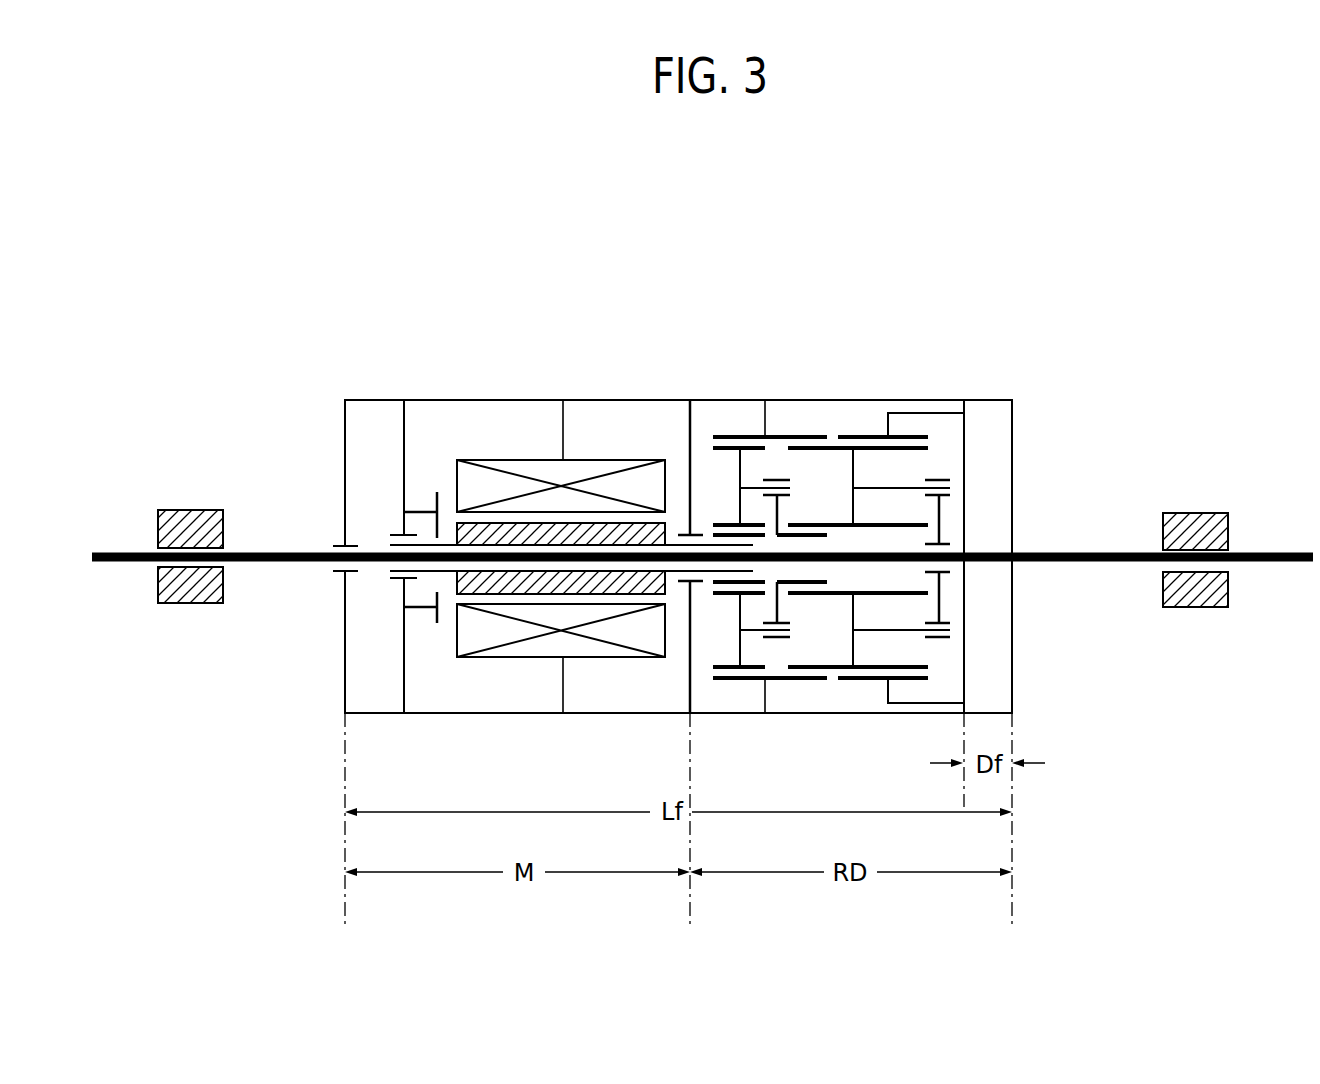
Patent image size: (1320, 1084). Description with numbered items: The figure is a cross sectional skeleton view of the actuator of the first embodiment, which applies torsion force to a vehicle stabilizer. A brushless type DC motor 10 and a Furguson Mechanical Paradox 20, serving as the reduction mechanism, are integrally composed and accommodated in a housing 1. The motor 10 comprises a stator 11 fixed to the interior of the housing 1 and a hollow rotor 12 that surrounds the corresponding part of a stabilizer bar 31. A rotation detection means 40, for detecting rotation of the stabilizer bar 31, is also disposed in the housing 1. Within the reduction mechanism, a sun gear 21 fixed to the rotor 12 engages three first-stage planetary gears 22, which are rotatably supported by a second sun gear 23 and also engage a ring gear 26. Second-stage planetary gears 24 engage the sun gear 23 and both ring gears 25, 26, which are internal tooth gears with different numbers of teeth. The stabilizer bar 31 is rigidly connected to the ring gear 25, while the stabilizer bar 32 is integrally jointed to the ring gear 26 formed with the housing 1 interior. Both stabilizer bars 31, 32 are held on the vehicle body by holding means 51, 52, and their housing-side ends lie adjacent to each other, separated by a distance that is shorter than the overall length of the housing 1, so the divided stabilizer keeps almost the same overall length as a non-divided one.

The housing 1 is at (597, 714).
The brushless type DC motor 10 is at (571, 563).
The stator 11 is at (512, 483).
The rotor 12 is at (457, 528).
The Furguson Mechanical Paradox 20 is at (822, 561).
The sun gear 21 is at (722, 593).
The first-stage planetary gears 22 is at (714, 582).
The sun gear 23 is at (777, 516).
The second-stage planetary gears 24 is at (832, 670).
The ring gear 25 is at (868, 436).
The ring gear 26 is at (745, 436).
The stabilizer bar 31 is at (262, 553).
The stabilizer bar 32 is at (1085, 553).
The rotation detection means 40 is at (420, 607).
The holding means 51 is at (188, 510).
The holding means 52 is at (1203, 513).